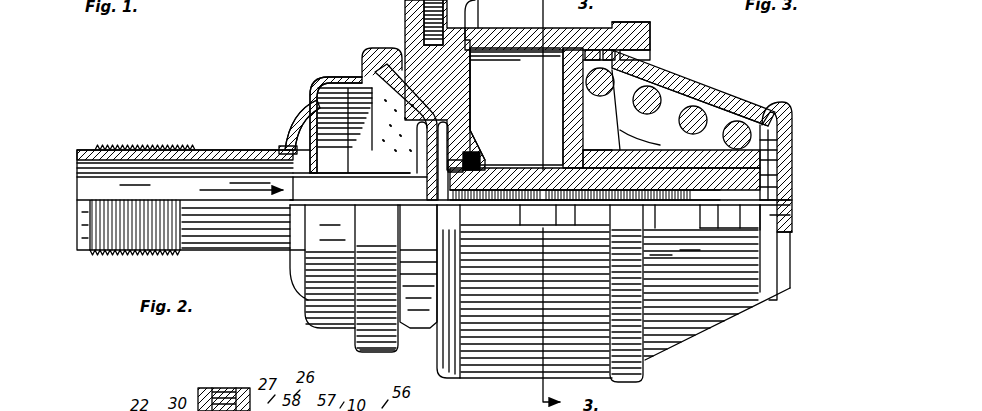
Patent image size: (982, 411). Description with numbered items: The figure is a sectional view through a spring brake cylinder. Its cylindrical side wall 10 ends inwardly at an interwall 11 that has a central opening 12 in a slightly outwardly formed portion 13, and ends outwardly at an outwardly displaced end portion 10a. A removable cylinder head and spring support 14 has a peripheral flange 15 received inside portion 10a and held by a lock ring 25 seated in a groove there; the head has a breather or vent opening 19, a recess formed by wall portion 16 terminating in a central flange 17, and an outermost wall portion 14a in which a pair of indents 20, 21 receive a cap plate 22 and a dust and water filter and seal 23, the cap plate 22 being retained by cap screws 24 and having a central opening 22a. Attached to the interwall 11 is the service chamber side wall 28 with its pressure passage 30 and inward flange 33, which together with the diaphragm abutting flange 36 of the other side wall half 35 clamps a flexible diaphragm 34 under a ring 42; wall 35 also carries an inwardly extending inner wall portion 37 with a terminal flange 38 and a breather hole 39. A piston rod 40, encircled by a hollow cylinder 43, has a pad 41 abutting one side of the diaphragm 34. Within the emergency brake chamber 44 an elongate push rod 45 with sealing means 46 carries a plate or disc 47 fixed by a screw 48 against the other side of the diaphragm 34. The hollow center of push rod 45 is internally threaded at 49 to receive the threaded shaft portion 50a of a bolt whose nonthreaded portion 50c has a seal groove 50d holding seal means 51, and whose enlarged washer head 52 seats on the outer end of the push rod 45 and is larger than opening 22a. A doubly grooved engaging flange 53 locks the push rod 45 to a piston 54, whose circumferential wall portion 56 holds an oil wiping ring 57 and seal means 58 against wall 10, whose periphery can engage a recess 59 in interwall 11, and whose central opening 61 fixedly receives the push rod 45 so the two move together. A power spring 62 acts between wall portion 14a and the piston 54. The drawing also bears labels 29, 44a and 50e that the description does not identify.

The cylindrical side wall 10 is at (495, 28).
The outwardly displaced outer end portion 10a is at (656, 38).
The interwall 11 is at (510, 104).
The central opening 12 is at (500, 203).
The outwardly formed portion 13 is at (481, 163).
The removable cylinder head and spring support 14 is at (706, 92).
The outermost wall portion 14a is at (776, 104).
The peripheral flange 15 is at (650, 30).
The recess wall portion 16 is at (745, 116).
The central flange 17 is at (628, 150).
The breather or vent opening 19 is at (665, 70).
The indent 20 is at (792, 140).
The indent 21 is at (792, 180).
The cap plate 22 is at (792, 160).
The opening 22a is at (792, 198).
The dust and water filter and seal 23 is at (792, 222).
The cap screws 24 is at (782, 126).
The lock ring 25 is at (642, 56).
The service chamber side wall 28 is at (398, 125).
The hub wall 29 is at (470, 120).
The pressure passages or opening 30 is at (408, 40).
The inward flange 33 is at (360, 128).
The flexible diaphragm 34 is at (388, 118).
The service chamber side wall half 35 is at (310, 88).
The diaphragm abutting flange 36 is at (370, 55).
The inner wall portion 37 is at (300, 120).
The terminal flange 38 is at (280, 148).
The breather hole 39 is at (345, 75).
The piston rod 40 is at (343, 206).
The pad 41 is at (388, 206).
The ring 42 is at (360, 350).
The hollow cylinder 43 is at (196, 150).
The emergency or safety brake chamber 44 is at (540, 104).
The inner housing flange 44a is at (722, 230).
The push rod 45 is at (538, 204).
The sealing means 46 is at (430, 160).
The plate or disc 47 is at (415, 188).
The screw 48 is at (458, 218).
The internally threaded portion 49 is at (586, 204).
The externally threaded shaft portion 50a is at (652, 222).
The outer nonthreaded portion 50c is at (668, 207).
The seal groove 50d is at (688, 251).
The rotor section 50e is at (782, 236).
The seal means 51 is at (660, 255).
The washer head 52 is at (724, 206).
The engaging flange 53 is at (616, 206).
The piston 54 is at (565, 120).
The circumferential wall portion 56 is at (565, 28).
The oil wiping ring 57 is at (613, 28).
The seal means 58 is at (596, 48).
The circumferential recess 59 is at (484, 84).
The opening 61 is at (605, 174).
The power spring 62 is at (740, 106).